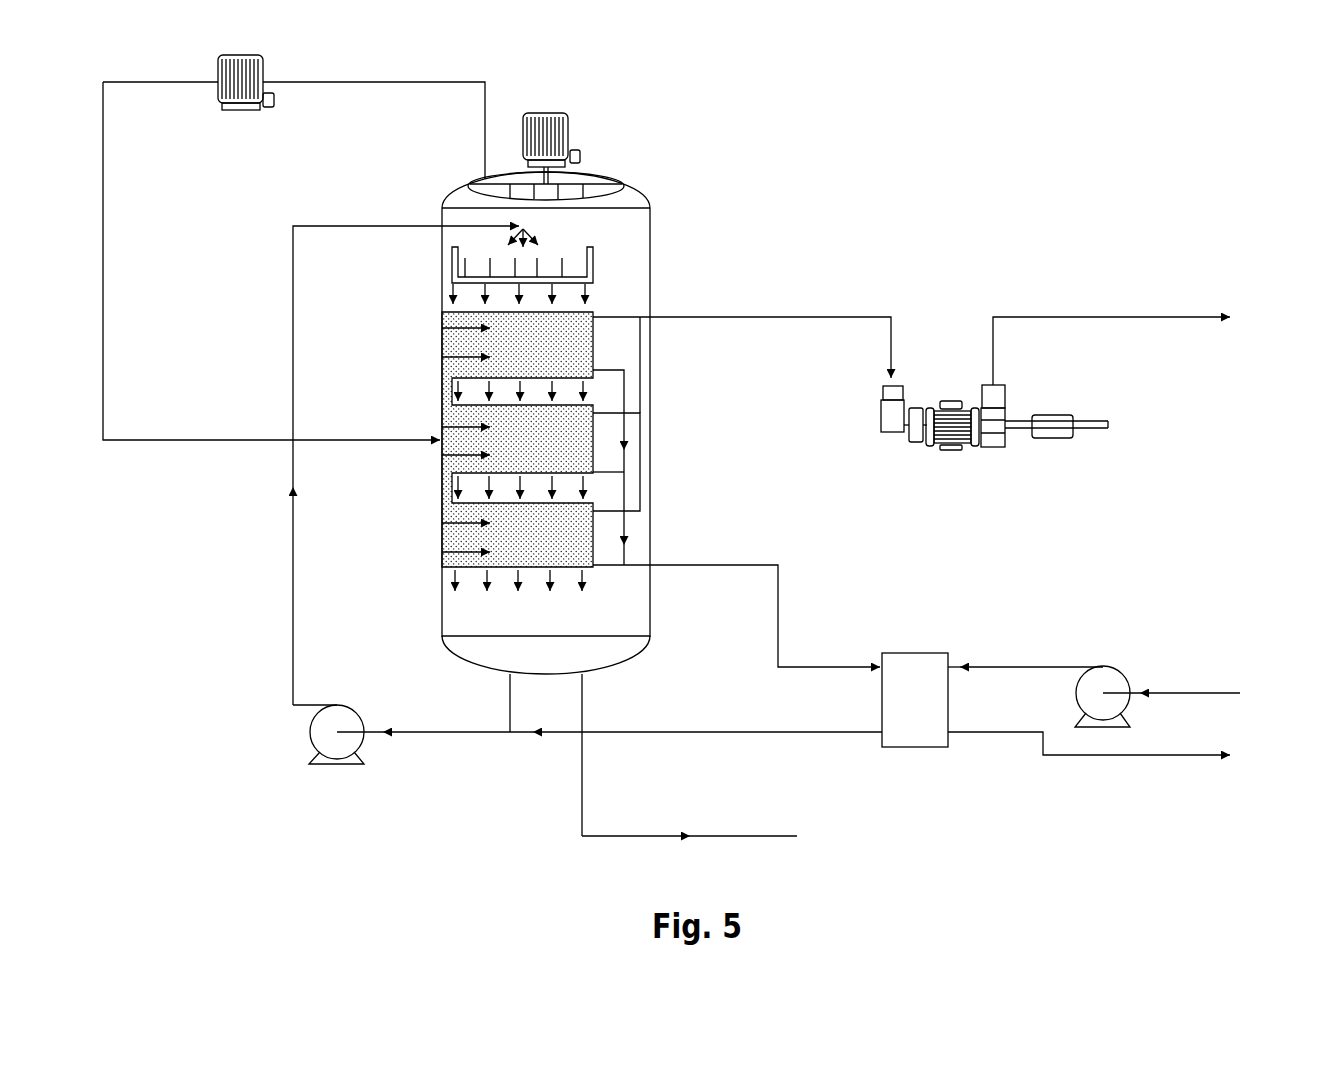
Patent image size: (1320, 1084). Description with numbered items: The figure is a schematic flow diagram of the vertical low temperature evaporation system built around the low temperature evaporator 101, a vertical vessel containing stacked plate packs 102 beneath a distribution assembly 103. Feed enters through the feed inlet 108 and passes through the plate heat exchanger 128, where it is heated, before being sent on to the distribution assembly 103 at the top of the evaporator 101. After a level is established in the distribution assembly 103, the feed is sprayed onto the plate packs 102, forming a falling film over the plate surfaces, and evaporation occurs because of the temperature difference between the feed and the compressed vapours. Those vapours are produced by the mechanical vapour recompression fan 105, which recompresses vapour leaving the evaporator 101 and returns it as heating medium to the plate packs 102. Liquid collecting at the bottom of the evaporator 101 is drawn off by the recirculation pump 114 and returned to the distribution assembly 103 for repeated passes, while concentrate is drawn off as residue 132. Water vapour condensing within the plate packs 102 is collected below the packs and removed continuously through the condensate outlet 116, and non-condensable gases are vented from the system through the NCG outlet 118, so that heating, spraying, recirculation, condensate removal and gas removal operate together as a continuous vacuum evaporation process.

The low temperature evaporator 101 is at (717, 242).
The plate pack 102 is at (428, 354).
The distribution assembly 103 is at (428, 286).
The MVR fan 105 is at (267, 147).
The feed inlet 108 is at (1300, 706).
The recirculation pump 114 is at (357, 810).
The condensate outlet 116 is at (1300, 766).
The NCG outlet 118 is at (1300, 334).
The plate heat exchanger 128 is at (938, 783).
The residue 132 is at (865, 848).